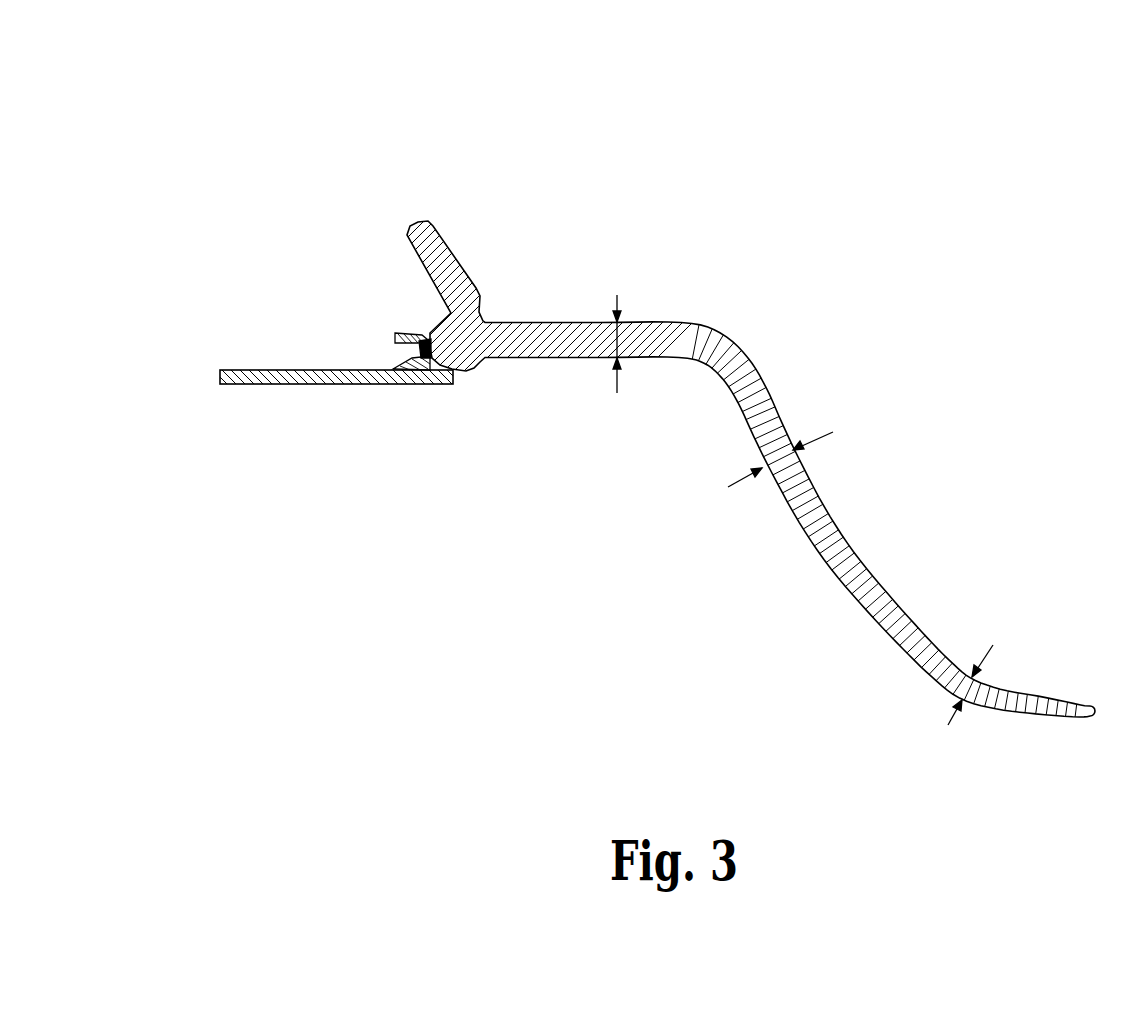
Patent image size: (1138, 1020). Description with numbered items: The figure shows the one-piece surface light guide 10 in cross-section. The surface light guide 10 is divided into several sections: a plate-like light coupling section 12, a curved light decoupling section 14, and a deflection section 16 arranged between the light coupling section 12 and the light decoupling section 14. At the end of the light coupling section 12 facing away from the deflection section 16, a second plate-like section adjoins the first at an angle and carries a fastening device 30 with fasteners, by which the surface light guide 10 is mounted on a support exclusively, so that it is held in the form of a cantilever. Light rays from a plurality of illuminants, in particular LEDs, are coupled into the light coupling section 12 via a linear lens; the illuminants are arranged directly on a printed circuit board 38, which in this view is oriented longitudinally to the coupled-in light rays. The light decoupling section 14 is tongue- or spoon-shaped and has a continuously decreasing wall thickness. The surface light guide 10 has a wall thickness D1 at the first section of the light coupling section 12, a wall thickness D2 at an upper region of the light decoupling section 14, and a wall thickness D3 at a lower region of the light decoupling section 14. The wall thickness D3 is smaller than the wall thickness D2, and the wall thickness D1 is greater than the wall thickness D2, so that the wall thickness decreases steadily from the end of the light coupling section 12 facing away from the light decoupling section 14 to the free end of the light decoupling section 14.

The surface light guide 10 is at (730, 166).
The light coupling section 12 is at (666, 278).
The light decoupling section 14 is at (783, 343).
The deflection section 16 is at (778, 344).
The fastening device 30 is at (446, 221).
The printed circuit board 38 is at (350, 385).
The wall thickness D1 is at (603, 366).
The wall thickness D2 is at (760, 451).
The wall thickness D3 is at (957, 688).